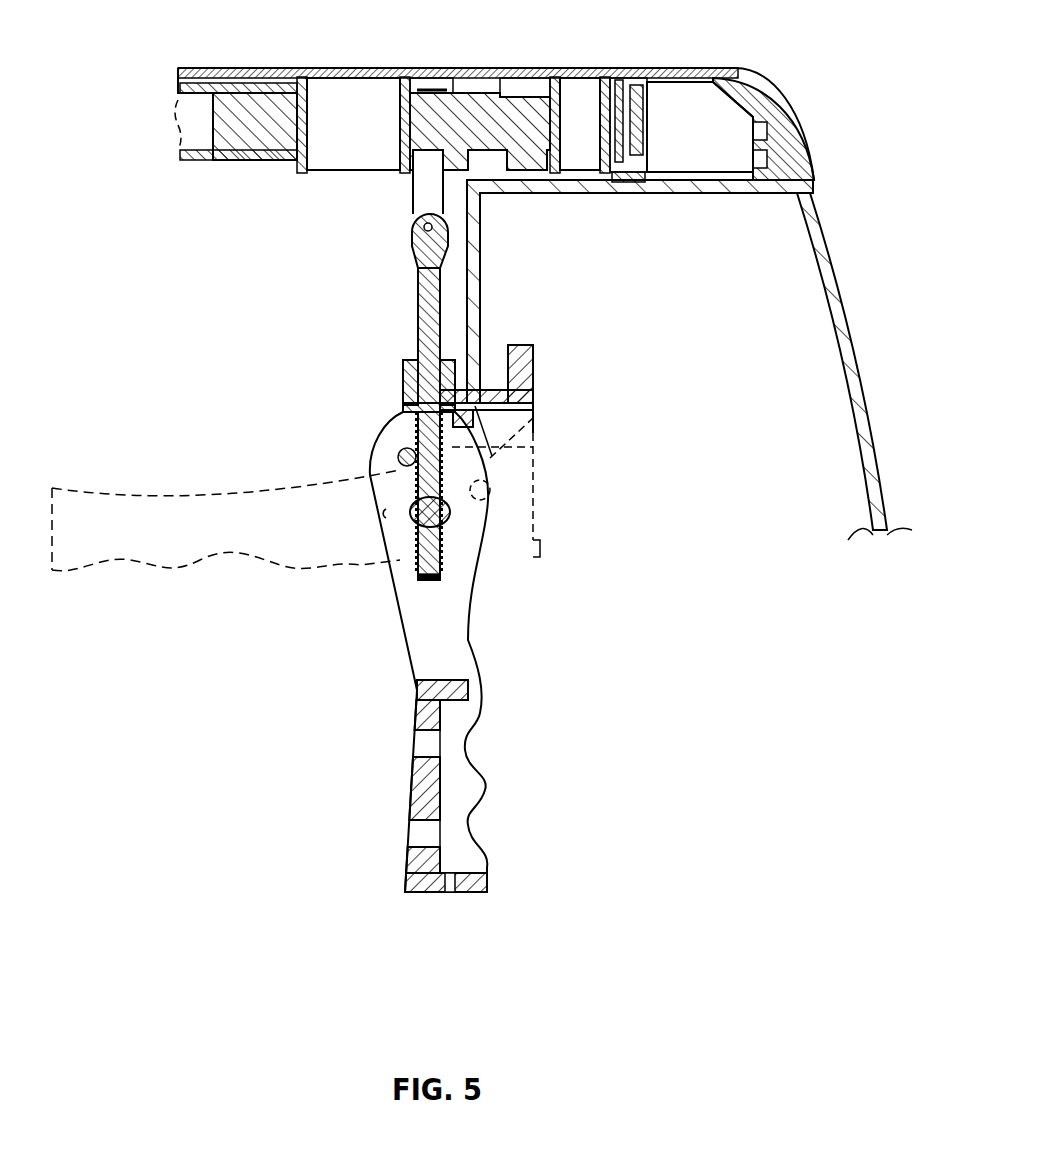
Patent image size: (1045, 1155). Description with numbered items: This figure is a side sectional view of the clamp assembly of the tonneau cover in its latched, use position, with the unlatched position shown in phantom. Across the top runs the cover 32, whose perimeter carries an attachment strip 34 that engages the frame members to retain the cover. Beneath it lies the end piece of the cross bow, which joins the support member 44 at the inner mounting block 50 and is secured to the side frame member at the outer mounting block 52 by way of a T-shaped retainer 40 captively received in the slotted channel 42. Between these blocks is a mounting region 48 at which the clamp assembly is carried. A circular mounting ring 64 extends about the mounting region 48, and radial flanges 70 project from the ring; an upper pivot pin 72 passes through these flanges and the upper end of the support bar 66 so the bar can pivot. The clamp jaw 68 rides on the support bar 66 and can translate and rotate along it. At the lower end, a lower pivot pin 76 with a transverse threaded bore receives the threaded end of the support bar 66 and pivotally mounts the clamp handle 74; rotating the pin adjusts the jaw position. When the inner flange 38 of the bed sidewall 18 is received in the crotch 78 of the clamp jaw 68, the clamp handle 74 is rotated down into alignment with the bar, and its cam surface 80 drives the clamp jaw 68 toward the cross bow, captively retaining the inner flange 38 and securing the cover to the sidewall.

The bed sidewall 18 is at (848, 303).
The cover 32 is at (332, 67).
The attachment strip 34 is at (814, 154).
The inner flange 38 is at (481, 251).
The T-shaped retainer 40 is at (625, 123).
The slotted channel 42 is at (625, 147).
The support member 44 is at (207, 163).
The mounting region 48 is at (530, 77).
The inner mounting block 50 is at (362, 95).
The outer mounting block 52 is at (587, 78).
The mounting ring 64 is at (430, 78).
The support bar 66 is at (418, 272).
The clamp jaw 68 is at (534, 353).
The radial flanges 70 is at (427, 177).
The upper pivot pin 72 is at (424, 227).
The clamp handle 74 is at (400, 623).
The lower pivot pin 76 is at (450, 513).
The crotch 78 is at (452, 405).
The cam surface 80 is at (390, 421).